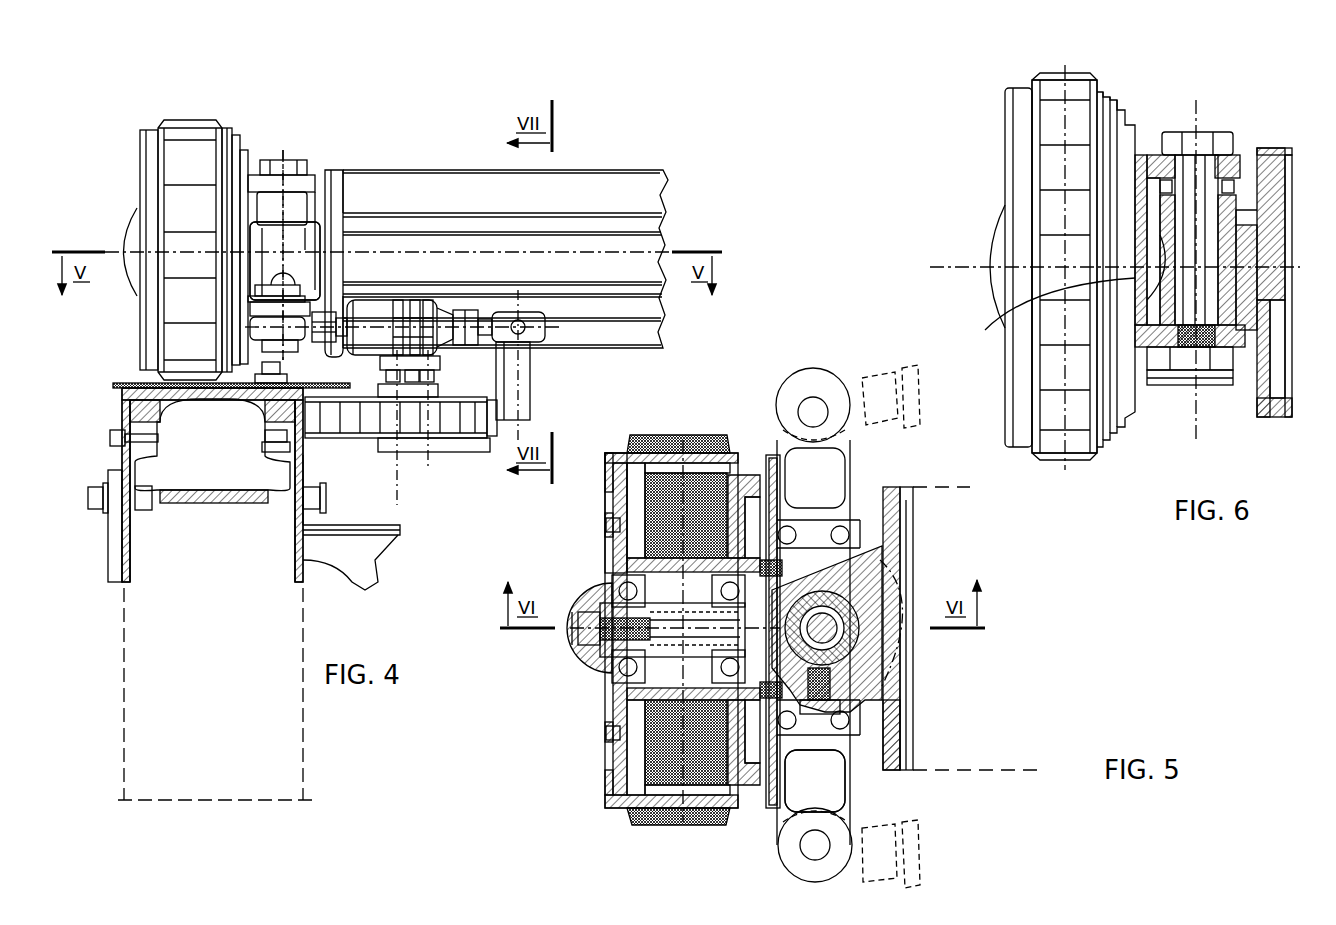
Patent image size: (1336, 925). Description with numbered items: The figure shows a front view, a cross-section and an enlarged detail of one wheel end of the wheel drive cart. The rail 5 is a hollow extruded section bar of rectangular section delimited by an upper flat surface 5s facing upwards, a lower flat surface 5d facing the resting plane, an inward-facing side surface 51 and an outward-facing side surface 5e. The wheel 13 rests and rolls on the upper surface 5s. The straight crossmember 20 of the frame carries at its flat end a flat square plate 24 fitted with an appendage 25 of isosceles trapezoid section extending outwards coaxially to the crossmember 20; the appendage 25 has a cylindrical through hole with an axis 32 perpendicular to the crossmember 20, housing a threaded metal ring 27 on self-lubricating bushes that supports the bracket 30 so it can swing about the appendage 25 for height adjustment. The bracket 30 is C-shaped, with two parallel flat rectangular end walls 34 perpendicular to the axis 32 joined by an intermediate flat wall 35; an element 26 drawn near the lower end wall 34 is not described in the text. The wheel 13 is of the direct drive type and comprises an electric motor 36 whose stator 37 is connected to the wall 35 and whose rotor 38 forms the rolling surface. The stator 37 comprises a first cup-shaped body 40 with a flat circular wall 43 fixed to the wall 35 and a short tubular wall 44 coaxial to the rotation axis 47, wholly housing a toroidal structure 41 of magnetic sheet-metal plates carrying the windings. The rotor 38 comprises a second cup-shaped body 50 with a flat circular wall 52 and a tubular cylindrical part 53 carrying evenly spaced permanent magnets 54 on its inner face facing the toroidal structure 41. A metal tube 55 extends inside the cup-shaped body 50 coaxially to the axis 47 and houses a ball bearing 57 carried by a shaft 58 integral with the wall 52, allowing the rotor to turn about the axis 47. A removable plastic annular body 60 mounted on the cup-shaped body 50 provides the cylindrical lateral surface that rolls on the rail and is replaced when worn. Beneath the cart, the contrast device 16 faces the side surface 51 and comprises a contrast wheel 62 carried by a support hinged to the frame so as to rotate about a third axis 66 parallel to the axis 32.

In FIG. 4, the rail 5 is at (98, 455).
In FIG. 4, the upper flat surface 5s is at (126, 380).
In FIG. 4, the rail edge 5e is at (100, 543).
In FIG. 4, the lower flat surface 5d is at (210, 812).
In FIG. 5, the wheel 13 is at (600, 818).
In FIG. 4, the contrast device 16 is at (448, 505).
In FIG. 4, the crossmember 20 is at (540, 196).
In FIG. 4, the flat square plate 24 is at (338, 190).
In FIG. 5, the flat square plate 24 is at (900, 486).
In FIG. 6, the flat square plate 24 is at (1265, 150).
In FIG. 4, the appendage 25 is at (292, 218).
In FIG. 5, the appendage 25 is at (822, 566).
In FIG. 6, the appendage 25 is at (1240, 210).
In FIG. 6, the nut 26 is at (1165, 385).
In FIG. 6, the threaded metal ring 27 is at (1268, 415).
In FIG. 4, the bracket 30 is at (255, 148).
In FIG. 6, the bracket 30 is at (1145, 150).
In FIG. 4, the axis 32 is at (300, 258).
In FIG. 5, the axis 32 is at (870, 625).
In FIG. 6, the axis 32 is at (1192, 150).
In FIG. 4, the flat rectangular end walls 34 is at (284, 196).
In FIG. 5, the flat rectangular end walls 34 is at (860, 700).
In FIG. 6, the flat rectangular end walls 34 is at (1232, 165).
In FIG. 6, the intermediate flat rectangular wall 35 is at (985, 330).
In FIG. 5, the electric motor 36 is at (596, 786).
In FIG. 5, the stator 37 is at (760, 470).
In FIG. 5, the rotor 38 is at (596, 488).
In FIG. 5, the first cup-shaped body 40 is at (778, 790).
In FIG. 5, the toroidal structure 41 is at (712, 472).
In FIG. 5, the flat circular wall 43 is at (762, 766).
In FIG. 5, the short tubular wall 44 is at (742, 455).
In FIG. 4, the rotation axis 47 is at (122, 240).
In FIG. 5, the rotation axis 47 is at (898, 638).
In FIG. 6, the rotation axis 47 is at (950, 260).
In FIG. 5, the second cup-shaped body 50 is at (598, 538).
In FIG. 6, the second cup-shaped body 50 is at (1000, 146).
In FIG. 4, the side surface 51 is at (312, 462).
In FIG. 5, the flat circular wall 52 is at (600, 540).
In FIG. 5, the tubular cylindrical part 53 is at (622, 458).
In FIG. 5, the permanent magnets 54 is at (672, 480).
In FIG. 5, the metal tube 55 is at (660, 700).
In FIG. 5, the ball bearing 57 is at (598, 680).
In FIG. 5, the shaft 58 is at (590, 650).
In FIG. 4, the annular body 60 is at (199, 250).
In FIG. 5, the annular body 60 is at (676, 842).
In FIG. 6, the annular body 60 is at (1078, 470).
In FIG. 4, the contrast wheel 62 is at (478, 425).
In FIG. 4, the third axis 66 is at (505, 292).